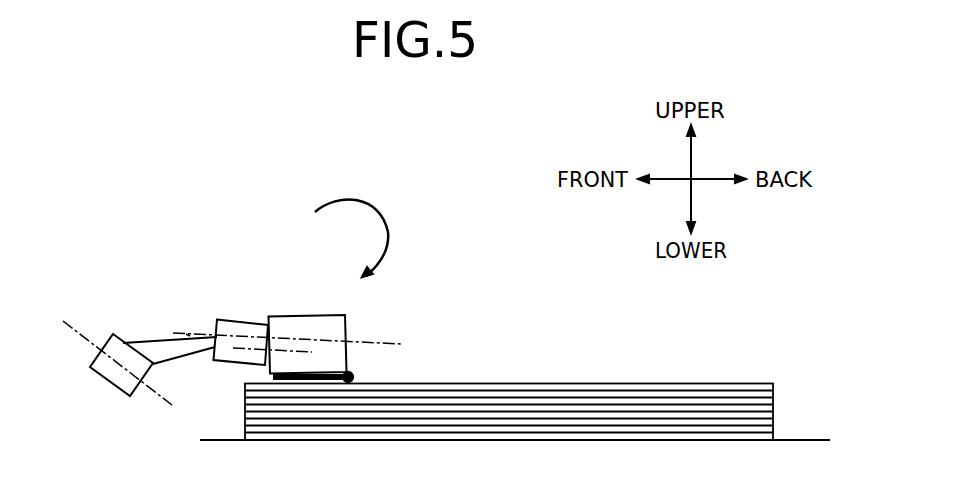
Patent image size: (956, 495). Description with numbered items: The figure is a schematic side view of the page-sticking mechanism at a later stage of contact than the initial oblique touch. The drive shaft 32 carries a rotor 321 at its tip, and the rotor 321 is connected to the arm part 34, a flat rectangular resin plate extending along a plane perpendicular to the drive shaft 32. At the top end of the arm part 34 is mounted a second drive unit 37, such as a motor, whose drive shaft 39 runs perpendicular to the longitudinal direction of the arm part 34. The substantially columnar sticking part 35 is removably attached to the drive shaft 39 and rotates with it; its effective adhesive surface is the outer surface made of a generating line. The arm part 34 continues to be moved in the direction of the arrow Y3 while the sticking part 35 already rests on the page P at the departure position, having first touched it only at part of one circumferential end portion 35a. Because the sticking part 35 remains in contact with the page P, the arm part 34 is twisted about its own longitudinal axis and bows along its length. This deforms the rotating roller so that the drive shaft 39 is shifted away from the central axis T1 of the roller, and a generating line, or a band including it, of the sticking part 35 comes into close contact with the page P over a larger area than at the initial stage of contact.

The drive shaft 32 is at (80, 336).
The rotor 321 is at (118, 337).
The arm part 34 is at (168, 353).
The drive shaft 39 is at (188, 335).
The second drive unit 37 is at (257, 325).
The sticking part 35 is at (316, 320).
The circumferential end portion 35a is at (357, 375).
The central axis T1 is at (388, 340).
The page P is at (718, 383).
The arrow Y3 is at (383, 212).